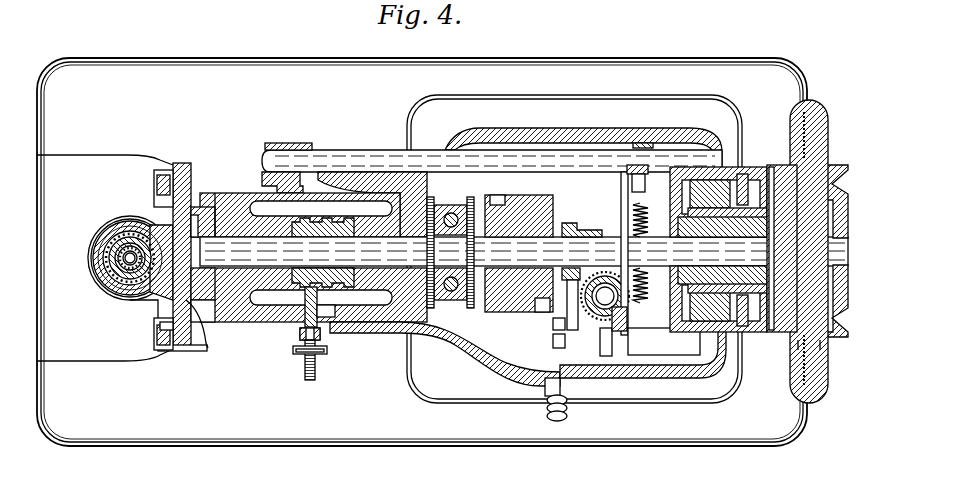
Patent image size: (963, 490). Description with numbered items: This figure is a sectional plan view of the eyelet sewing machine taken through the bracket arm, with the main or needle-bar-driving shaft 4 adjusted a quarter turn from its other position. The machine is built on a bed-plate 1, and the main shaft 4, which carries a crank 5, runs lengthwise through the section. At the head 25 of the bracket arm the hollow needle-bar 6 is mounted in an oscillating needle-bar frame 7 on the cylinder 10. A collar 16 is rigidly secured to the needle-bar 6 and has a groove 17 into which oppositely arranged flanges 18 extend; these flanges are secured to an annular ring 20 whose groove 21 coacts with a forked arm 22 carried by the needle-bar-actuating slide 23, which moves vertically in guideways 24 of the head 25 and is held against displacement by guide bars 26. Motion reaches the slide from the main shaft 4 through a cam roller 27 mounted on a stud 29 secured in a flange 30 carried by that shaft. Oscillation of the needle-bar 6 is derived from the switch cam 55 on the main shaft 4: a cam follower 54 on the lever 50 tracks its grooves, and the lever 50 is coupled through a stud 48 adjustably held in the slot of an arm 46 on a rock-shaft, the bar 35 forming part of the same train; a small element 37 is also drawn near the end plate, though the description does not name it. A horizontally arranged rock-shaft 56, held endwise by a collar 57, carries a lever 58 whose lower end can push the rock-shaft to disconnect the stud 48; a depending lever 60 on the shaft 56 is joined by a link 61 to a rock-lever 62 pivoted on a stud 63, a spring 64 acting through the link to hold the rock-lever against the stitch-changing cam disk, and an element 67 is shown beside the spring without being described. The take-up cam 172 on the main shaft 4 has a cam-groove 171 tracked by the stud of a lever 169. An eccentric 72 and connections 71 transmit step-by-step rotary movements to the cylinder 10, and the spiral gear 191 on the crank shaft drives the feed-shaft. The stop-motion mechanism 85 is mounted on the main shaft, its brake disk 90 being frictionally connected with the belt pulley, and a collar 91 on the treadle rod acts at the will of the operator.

The bed-plate 1 is at (217, 68).
The main or needle-bar-driving shaft 4 is at (258, 243).
The crank 5 is at (450, 252).
The hollow needle-bar 6 is at (110, 236).
The needle-bar frame 7 is at (120, 296).
The cylinder 10 is at (118, 238).
The collar 16 is at (129, 215).
The groove 17 is at (107, 277).
The flanges 18 is at (100, 268).
The annular ring 20 is at (112, 283).
The groove 21 is at (92, 243).
The forked arm 22 is at (124, 282).
The needle-bar-actuating slide 23 is at (210, 344).
The guideways 24 is at (193, 306).
The head of the bracket arm 25 is at (183, 163).
The guide bars 26 is at (172, 207).
The cam roller 27 is at (197, 209).
The stud 29 is at (220, 205).
The flange 30 is at (207, 264).
The bar 35 is at (176, 351).
The washer 37 is at (172, 316).
The arm 46 is at (320, 350).
The stud 48 is at (315, 368).
The lever 50 is at (300, 333).
The cam follower 54 is at (318, 303).
The switch cam 55 is at (348, 214).
The horizontally arranged rock-shaft 56 is at (417, 157).
The collar 57 is at (270, 147).
The lever 58 is at (318, 180).
The depending lever 60 is at (644, 143).
The link 61 is at (628, 328).
The rock-lever 62 is at (629, 341).
The stud 63 is at (680, 352).
The spring 64 is at (641, 210).
The plate 67 is at (621, 183).
The connections 71 is at (570, 402).
The eccentric 72 is at (592, 229).
The stop-motion mechanism 85 is at (796, 138).
The brake disk 90 is at (780, 338).
The collar 91 is at (818, 110).
The lever 169 is at (562, 336).
The cam-groove 171 is at (500, 204).
The take-up cam 172 is at (500, 316).
The spiral gear 191 is at (604, 308).